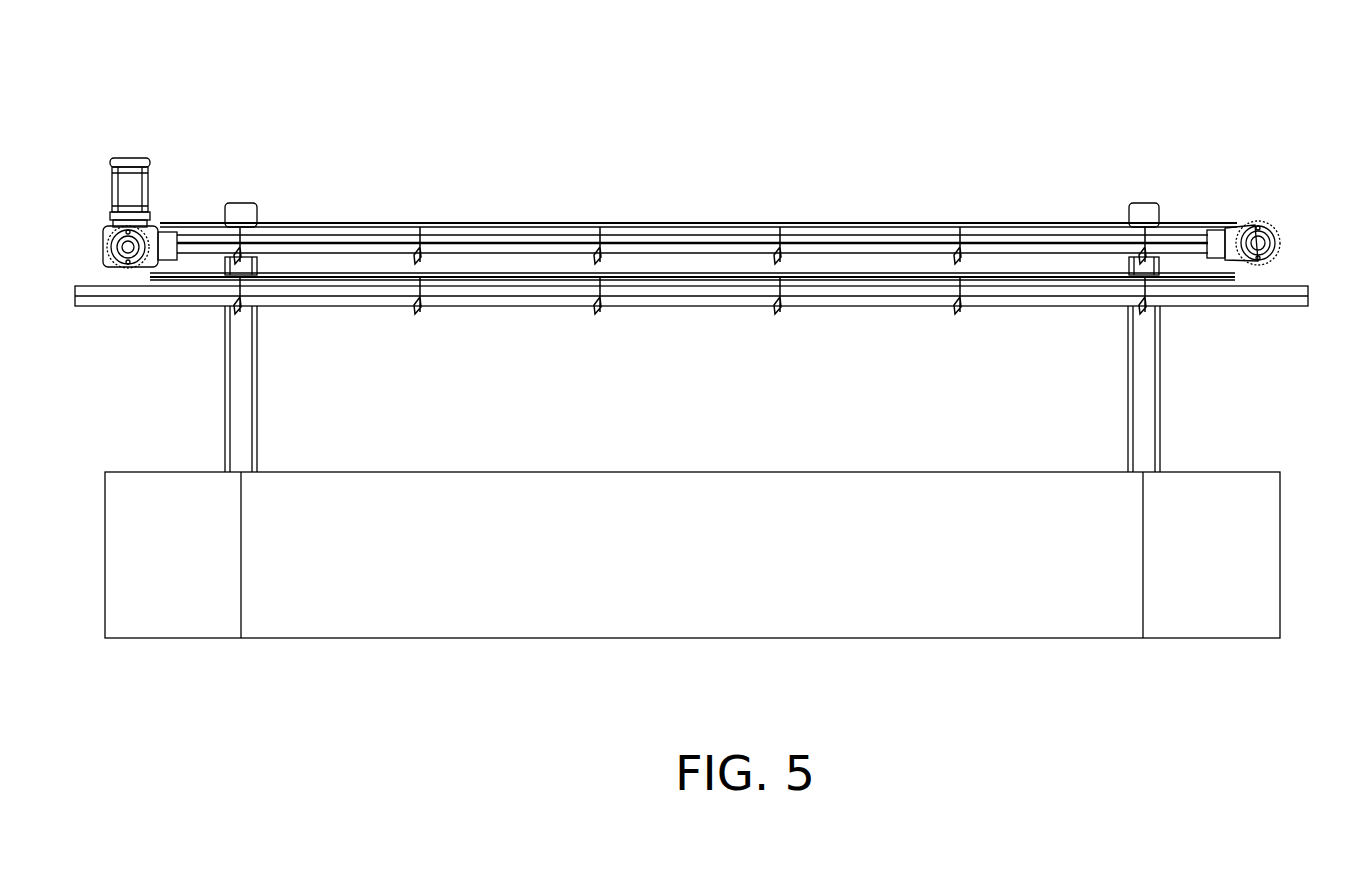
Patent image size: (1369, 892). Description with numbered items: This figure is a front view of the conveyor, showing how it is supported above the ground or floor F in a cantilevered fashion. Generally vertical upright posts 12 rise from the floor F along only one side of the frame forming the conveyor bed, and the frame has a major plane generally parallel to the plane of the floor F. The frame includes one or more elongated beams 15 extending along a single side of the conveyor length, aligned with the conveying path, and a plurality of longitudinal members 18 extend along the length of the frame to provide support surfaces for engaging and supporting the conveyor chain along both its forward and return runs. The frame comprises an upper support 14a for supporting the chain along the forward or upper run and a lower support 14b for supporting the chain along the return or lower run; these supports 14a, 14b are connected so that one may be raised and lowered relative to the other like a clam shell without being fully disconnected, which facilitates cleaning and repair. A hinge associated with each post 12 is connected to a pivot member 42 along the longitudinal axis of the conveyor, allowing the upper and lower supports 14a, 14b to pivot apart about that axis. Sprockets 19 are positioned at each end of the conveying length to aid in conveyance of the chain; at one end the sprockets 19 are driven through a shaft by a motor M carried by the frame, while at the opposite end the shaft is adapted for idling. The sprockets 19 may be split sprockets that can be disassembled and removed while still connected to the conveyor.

The motor M is at (122, 158).
The sprockets 19 is at (103, 237).
The pivot member 42 is at (237, 203).
The elongated beams 15 is at (487, 244).
The longitudinal members 18 is at (570, 225).
The upper support 14a is at (757, 212).
The lower support 14b is at (757, 318).
The posts 12 is at (257, 401).
The floor F is at (830, 471).